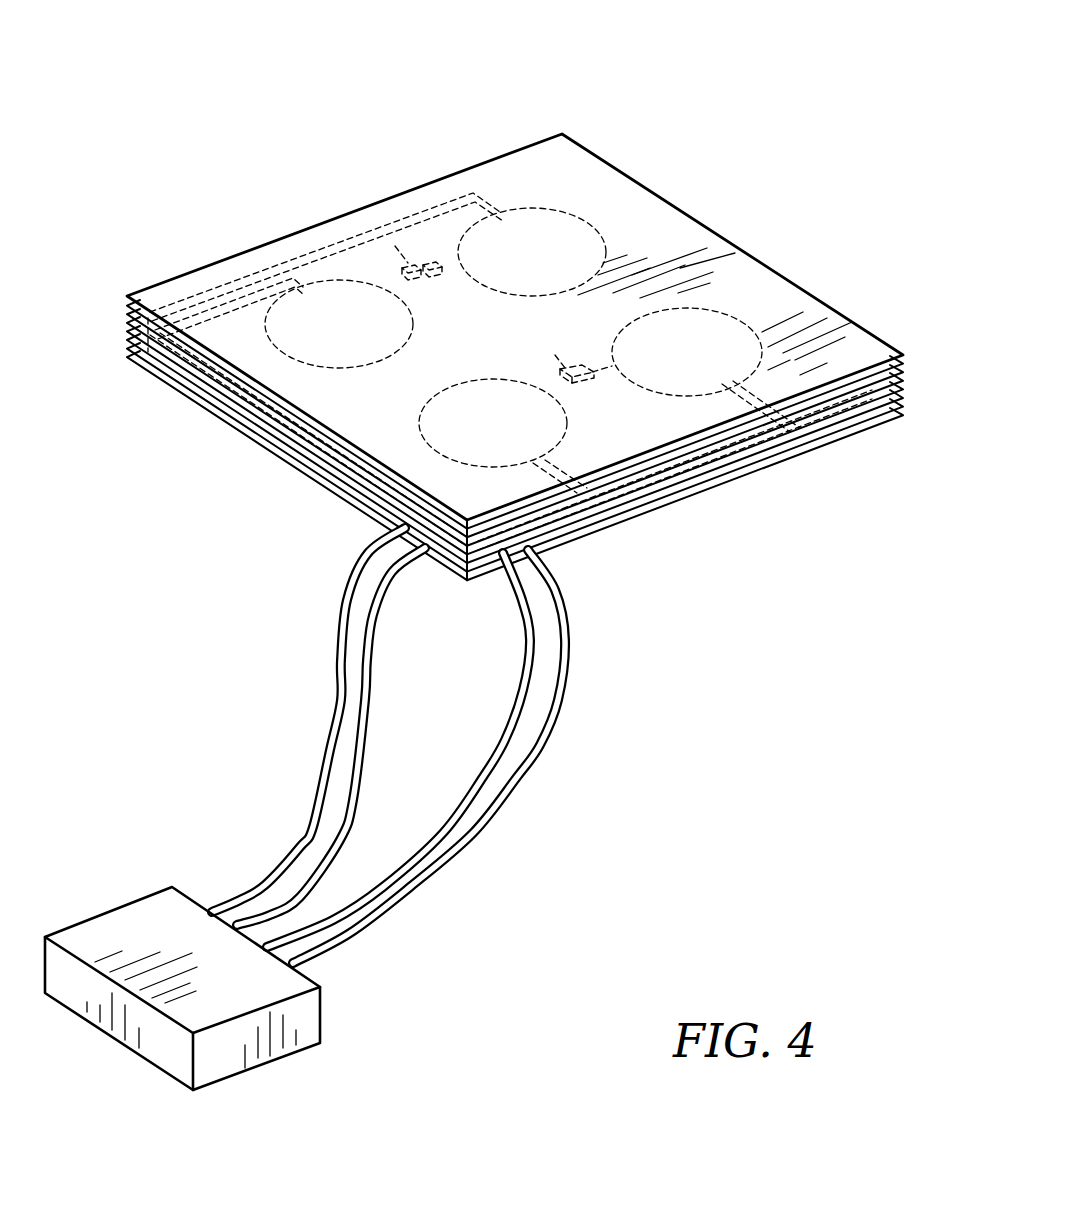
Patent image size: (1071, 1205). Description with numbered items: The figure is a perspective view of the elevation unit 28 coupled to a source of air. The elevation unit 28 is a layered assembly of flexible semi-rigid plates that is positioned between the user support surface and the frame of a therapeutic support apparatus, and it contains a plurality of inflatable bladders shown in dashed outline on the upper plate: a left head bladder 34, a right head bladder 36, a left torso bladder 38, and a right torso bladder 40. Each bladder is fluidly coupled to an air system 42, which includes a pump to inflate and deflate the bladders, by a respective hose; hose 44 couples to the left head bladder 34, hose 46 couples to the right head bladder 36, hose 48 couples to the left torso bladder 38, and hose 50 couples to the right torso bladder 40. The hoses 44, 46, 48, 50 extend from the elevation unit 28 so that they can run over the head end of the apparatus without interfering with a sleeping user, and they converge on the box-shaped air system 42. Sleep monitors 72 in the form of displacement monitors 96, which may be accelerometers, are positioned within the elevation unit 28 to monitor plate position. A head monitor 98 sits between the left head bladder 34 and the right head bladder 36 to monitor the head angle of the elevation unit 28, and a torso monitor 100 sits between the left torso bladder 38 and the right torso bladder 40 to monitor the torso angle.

The elevation unit 28 is at (752, 64).
The left head bladder 34 is at (343, 356).
The right head bladder 36 is at (575, 217).
The left torso bladder 38 is at (560, 413).
The right torso bladder 40 is at (737, 334).
The air system 42 is at (313, 1020).
The hose 44 is at (378, 646).
The hose 46 is at (340, 636).
The hose 48 is at (520, 681).
The hose 50 is at (561, 676).
The sleep monitor 72 is at (421, 278).
The displacement monitor 96 is at (411, 264).
The head monitor 98 is at (432, 263).
The torso monitor 100 is at (566, 370).